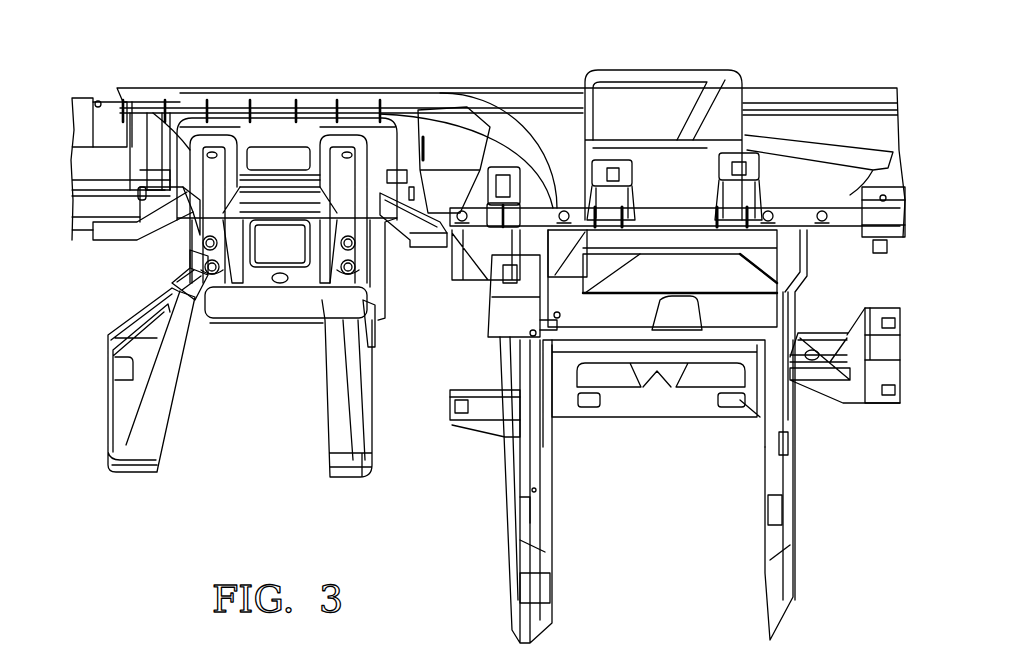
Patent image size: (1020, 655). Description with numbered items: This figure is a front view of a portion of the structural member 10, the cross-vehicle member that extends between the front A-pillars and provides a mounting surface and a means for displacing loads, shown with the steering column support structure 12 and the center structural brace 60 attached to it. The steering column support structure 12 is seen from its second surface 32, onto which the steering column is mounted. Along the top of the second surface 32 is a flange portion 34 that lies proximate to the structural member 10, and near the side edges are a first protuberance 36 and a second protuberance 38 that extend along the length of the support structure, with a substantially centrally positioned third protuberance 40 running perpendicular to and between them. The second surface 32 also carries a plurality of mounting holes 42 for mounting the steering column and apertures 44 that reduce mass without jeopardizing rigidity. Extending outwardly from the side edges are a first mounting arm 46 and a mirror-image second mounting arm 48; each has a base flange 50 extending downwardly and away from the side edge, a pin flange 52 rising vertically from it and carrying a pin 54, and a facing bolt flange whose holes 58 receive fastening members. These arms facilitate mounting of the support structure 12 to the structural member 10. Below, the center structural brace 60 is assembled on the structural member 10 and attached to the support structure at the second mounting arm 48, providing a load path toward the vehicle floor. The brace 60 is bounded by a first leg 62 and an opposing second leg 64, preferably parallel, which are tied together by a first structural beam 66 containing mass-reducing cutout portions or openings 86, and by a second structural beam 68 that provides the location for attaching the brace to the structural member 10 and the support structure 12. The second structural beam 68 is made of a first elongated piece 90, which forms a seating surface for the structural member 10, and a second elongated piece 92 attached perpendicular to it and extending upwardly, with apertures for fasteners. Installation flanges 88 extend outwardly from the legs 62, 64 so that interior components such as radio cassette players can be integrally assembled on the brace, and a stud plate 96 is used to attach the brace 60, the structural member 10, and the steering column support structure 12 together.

The structural member 10 is at (540, 90).
The steering column support structure 12 is at (170, 272).
The second surface 32 is at (257, 107).
The flange portion 34 is at (300, 133).
The first protuberance 36 is at (210, 205).
The second protuberance 38 is at (386, 160).
The third protuberance 40 is at (255, 175).
The mounting holes 42 is at (212, 152).
The apertures 44 is at (273, 153).
The first mounting arm 46 is at (112, 242).
The second mounting arm 48 is at (418, 247).
The base flange 50 is at (390, 255).
The pin flange 52 is at (163, 192).
The pin 54 is at (140, 194).
The holes 58 is at (108, 228).
The center structural brace 60 is at (503, 600).
The first leg 62 is at (503, 495).
The second leg 64 is at (790, 497).
The first structural beam 66 is at (668, 430).
The second structural beam 68 is at (642, 213).
The cutout portions or openings 86 is at (652, 384).
The installation flanges 88 is at (462, 422).
The first elongated piece 90 is at (662, 240).
The second elongated piece 92 is at (668, 198).
The stud plate 96 is at (452, 232).